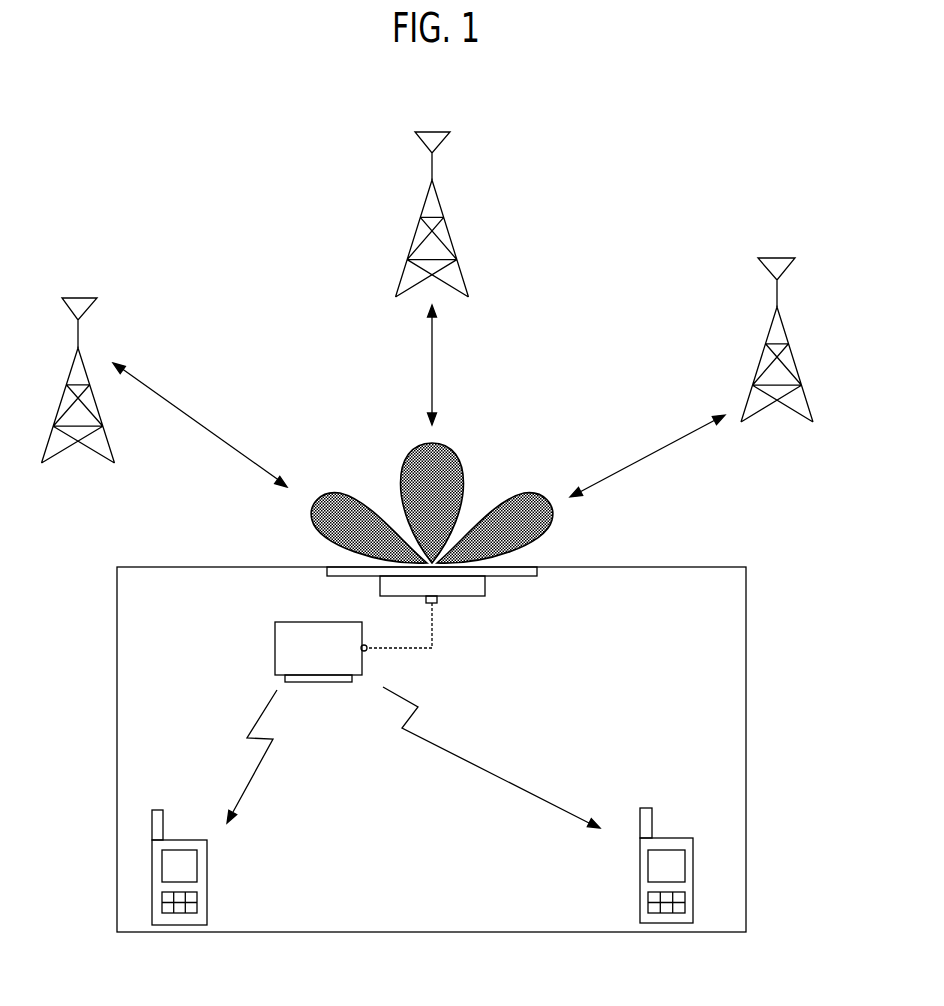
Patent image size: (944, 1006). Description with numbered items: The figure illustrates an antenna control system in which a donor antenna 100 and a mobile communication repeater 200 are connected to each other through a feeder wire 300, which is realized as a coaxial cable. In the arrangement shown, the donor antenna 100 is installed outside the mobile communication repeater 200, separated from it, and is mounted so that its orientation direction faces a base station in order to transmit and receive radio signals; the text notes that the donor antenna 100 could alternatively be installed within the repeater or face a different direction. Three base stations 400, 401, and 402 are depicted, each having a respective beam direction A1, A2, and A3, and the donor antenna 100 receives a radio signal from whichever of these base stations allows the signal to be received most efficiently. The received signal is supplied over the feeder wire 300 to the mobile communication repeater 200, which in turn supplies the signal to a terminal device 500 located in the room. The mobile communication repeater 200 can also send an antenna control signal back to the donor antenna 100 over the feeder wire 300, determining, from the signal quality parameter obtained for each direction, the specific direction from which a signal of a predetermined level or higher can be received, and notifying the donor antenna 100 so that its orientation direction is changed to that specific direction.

The donor antenna 100 is at (467, 585).
The mobile communication repeater 200 is at (275, 648).
The feeder wire 300 is at (433, 617).
The base station 400 is at (78, 365).
The base station 401 is at (432, 200).
The base station 402 is at (777, 324).
The terminal device 500 is at (207, 877).
The beam direction A1 is at (338, 500).
The beam direction A2 is at (415, 477).
The beam direction A3 is at (513, 505).